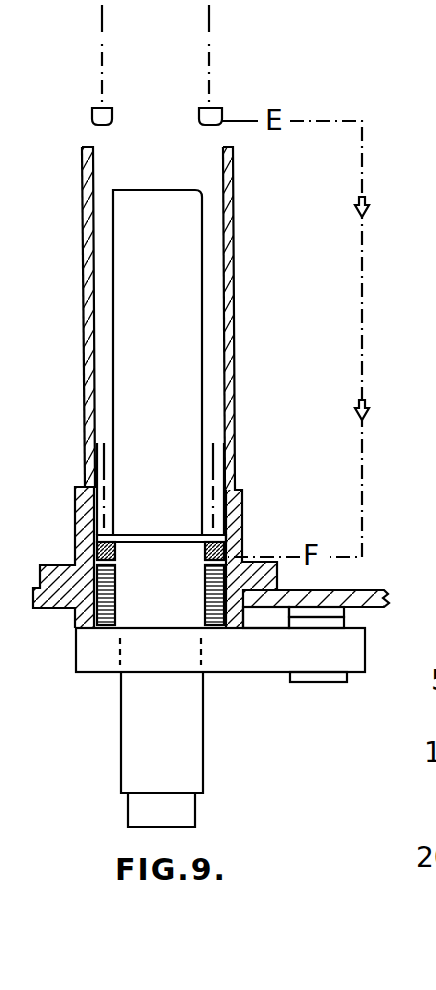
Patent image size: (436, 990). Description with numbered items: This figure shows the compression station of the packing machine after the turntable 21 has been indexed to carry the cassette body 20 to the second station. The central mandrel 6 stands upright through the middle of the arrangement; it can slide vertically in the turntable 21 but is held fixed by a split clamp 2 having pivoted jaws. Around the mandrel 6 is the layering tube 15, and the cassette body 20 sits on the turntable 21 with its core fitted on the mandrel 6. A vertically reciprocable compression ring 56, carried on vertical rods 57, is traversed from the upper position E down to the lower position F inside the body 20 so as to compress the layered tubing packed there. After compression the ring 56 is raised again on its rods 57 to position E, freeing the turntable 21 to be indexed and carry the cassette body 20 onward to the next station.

The split clamp 2 is at (268, 660).
The central mandrel 6 is at (186, 416).
The layering tube 15 is at (86, 310).
The cassette body 20 is at (92, 602).
The turntable 21 is at (360, 590).
The compression ring 56 is at (220, 108).
The vertical rods 57 is at (212, 40).